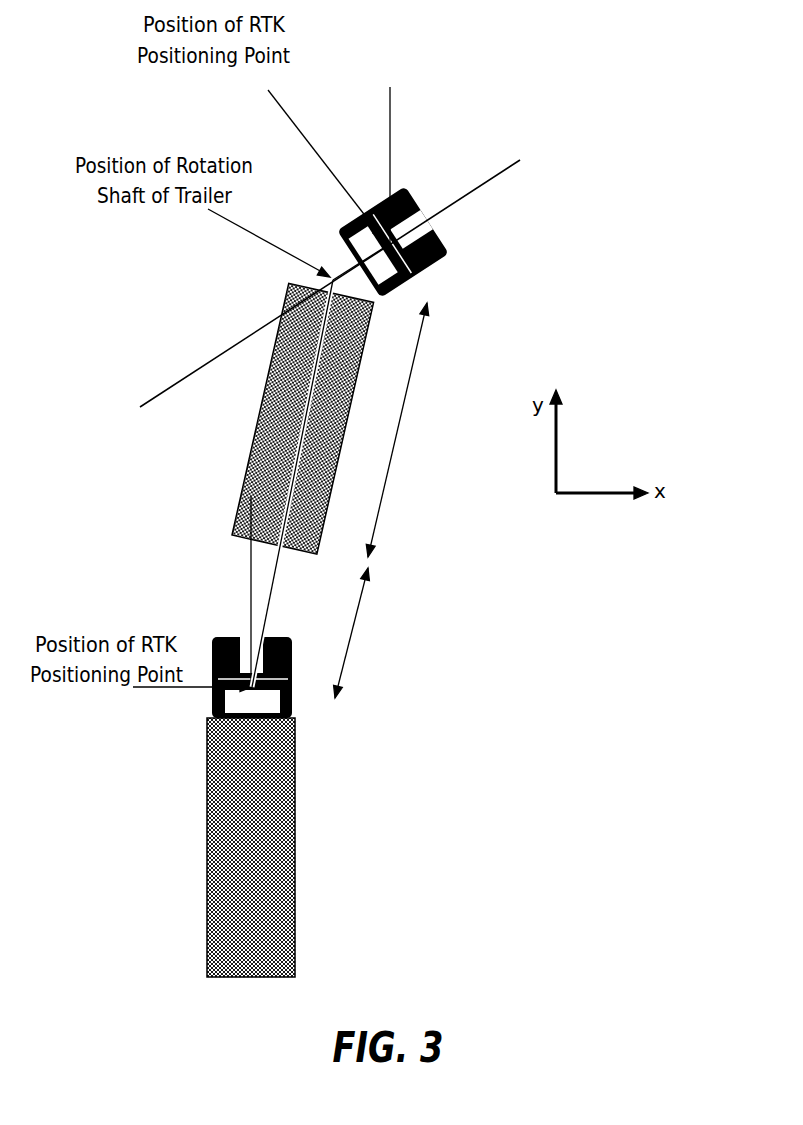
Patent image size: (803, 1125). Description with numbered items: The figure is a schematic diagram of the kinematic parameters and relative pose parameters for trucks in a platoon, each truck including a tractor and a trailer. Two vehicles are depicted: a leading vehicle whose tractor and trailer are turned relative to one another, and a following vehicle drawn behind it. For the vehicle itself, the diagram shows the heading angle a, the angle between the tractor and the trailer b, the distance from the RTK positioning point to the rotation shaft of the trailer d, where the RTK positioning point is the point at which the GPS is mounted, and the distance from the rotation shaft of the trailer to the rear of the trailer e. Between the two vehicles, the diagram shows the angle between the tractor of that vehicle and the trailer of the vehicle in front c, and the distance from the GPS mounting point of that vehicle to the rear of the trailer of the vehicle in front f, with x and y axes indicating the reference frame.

The heading angle a is at (330, 280).
The angle between the tractor and the trailer b is at (303, 418).
The angle between the tractor of that vehicle and the trailer of the vehicle in fron c is at (292, 483).
The distance from the RTK positioning point to the rotation shaft of the trailer d is at (391, 192).
The distance from the rotation shaft of the trailer to the rear of the trailer e is at (397, 430).
The distance from the GPS mounting point of that vehicle to the rear of the trailer f is at (357, 633).